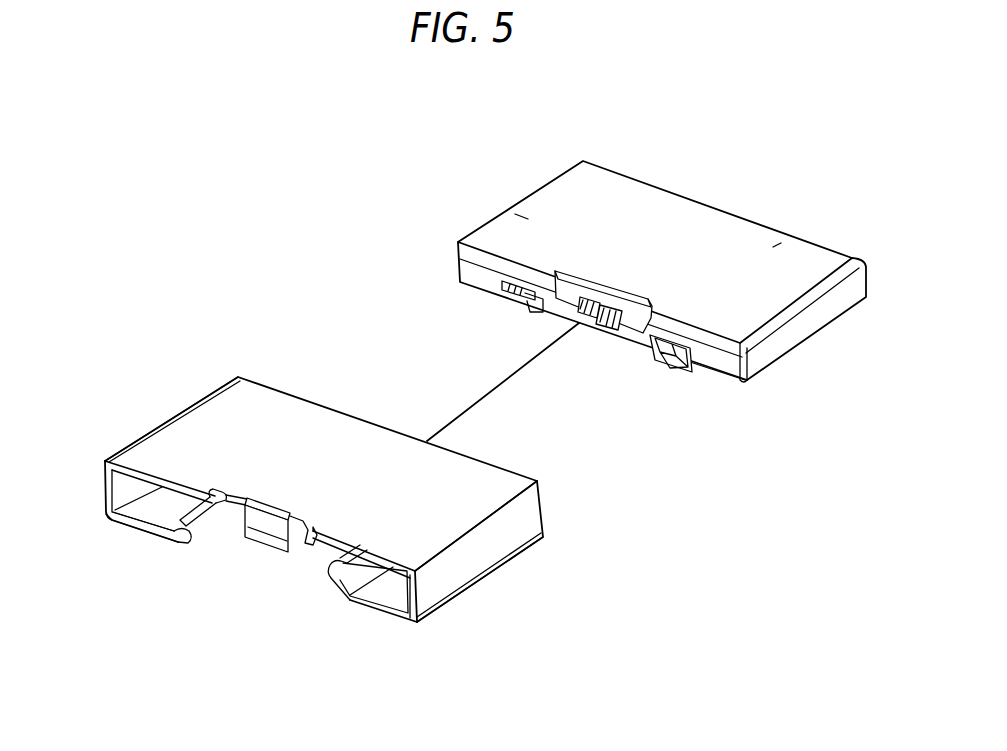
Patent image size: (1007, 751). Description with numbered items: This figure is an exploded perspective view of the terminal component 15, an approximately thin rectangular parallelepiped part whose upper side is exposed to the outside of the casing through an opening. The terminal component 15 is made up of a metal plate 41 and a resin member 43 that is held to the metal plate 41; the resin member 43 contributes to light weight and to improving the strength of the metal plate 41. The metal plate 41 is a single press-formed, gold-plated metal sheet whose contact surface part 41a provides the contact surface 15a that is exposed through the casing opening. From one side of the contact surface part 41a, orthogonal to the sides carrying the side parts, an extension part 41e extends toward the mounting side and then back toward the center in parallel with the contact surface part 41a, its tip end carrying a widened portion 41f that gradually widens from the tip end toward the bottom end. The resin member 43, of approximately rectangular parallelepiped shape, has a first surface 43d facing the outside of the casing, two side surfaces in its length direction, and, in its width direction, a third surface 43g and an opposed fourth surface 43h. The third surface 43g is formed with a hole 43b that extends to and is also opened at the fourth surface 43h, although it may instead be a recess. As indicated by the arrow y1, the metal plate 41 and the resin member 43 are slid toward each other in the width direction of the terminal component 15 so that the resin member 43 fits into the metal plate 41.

The terminal component 15 is at (257, 139).
The contact surface 15a is at (317, 505).
The metal plate 41 is at (317, 505).
The contact surface part 41a is at (278, 394).
The extension part 41e is at (263, 531).
The widened portion 41f is at (307, 544).
The resin member 43 is at (662, 282).
The hole 43b is at (610, 323).
The first surface 43d is at (701, 209).
The third surface 43g is at (710, 369).
The fourth surface 43h is at (789, 240).
The arrow y1 is at (508, 382).